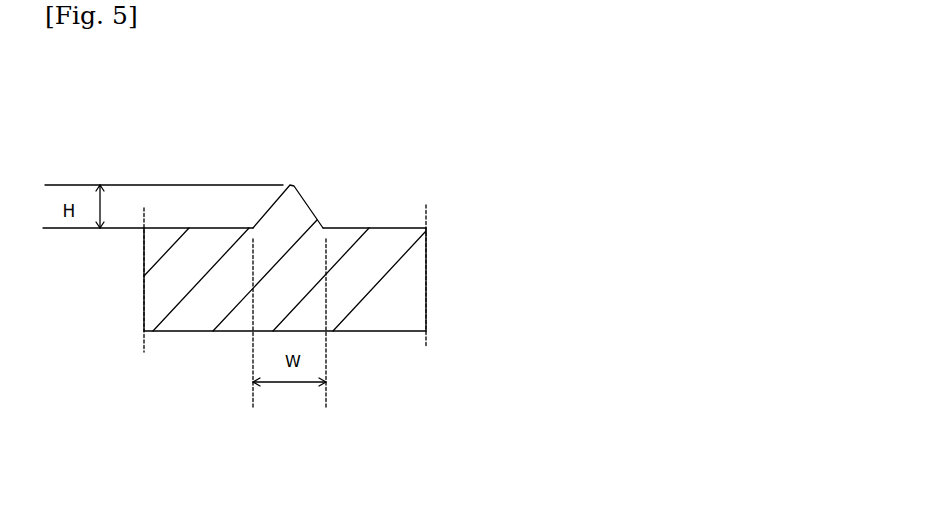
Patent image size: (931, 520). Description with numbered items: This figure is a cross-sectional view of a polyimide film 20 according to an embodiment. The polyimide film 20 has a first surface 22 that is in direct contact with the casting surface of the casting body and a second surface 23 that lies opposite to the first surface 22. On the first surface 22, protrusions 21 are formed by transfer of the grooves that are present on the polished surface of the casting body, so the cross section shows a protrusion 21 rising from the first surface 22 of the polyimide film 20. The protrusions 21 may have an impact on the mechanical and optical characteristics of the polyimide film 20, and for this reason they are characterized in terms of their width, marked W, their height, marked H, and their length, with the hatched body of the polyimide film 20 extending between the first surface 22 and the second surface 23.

The polyimide film 20 is at (393, 306).
The protrusions 21 is at (295, 213).
The first surface 22 is at (378, 228).
The second surface 23 is at (213, 331).